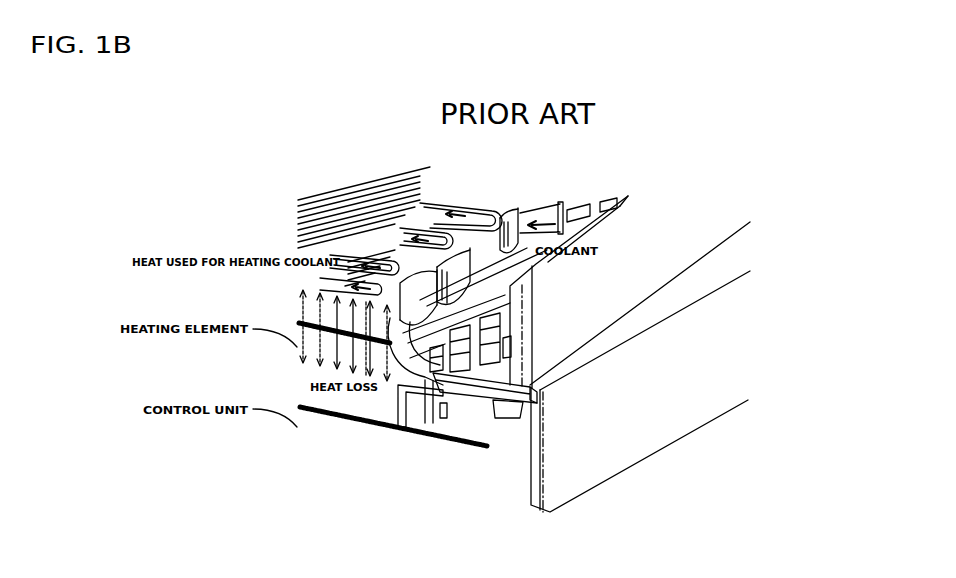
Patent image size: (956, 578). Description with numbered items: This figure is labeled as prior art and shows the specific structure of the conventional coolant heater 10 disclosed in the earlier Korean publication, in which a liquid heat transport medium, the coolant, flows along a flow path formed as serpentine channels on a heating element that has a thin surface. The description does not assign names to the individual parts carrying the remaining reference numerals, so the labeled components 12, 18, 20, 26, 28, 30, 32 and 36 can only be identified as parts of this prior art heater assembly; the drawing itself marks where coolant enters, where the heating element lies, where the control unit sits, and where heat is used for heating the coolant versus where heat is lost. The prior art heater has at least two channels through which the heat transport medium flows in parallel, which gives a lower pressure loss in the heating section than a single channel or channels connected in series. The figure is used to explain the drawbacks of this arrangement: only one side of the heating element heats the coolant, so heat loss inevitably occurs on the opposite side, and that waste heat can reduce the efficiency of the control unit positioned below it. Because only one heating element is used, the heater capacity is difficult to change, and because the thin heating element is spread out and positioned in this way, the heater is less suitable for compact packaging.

The connector assembly 10 is at (328, 464).
The housing plate 12 is at (653, 240).
The coolant inlet port 18 is at (508, 222).
The coolant port 20 is at (492, 225).
The rail 26 is at (474, 405).
The terminals / bus bar 28 is at (509, 330).
The clip 30 is at (423, 428).
The cooling plate 32 is at (617, 250).
The coolant tubes 36 is at (395, 255).